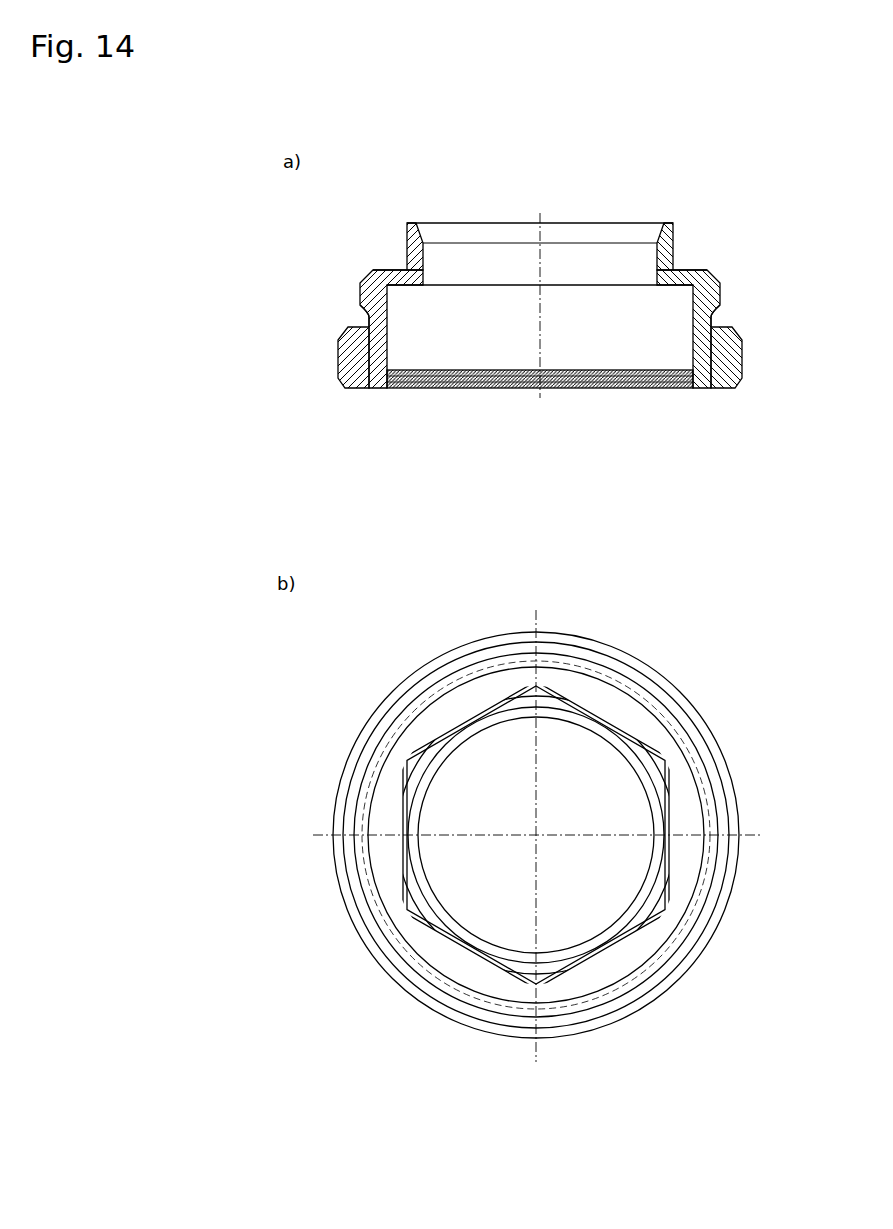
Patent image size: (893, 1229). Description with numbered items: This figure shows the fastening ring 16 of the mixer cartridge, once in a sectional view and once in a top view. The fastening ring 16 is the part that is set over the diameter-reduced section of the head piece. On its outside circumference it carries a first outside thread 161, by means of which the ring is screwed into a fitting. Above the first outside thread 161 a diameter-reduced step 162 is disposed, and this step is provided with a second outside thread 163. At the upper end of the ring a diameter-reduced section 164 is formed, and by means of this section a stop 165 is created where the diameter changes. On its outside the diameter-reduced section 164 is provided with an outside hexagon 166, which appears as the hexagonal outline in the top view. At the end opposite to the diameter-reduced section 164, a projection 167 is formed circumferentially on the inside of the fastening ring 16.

The fastening ring 16 is at (704, 150).
The first outside thread 161 is at (743, 358).
The diameter-reduced step 162 is at (714, 317).
The second outside thread 163 is at (722, 285).
The diameter-reduced section 164 is at (675, 248).
The stop 165 is at (392, 273).
The outside hexagon 166 is at (670, 742).
The projection 167 is at (397, 388).